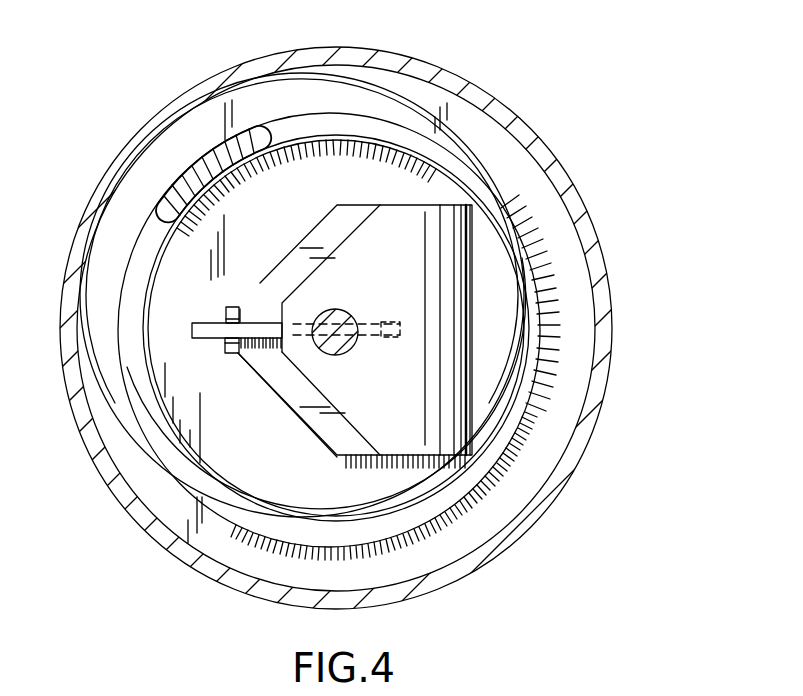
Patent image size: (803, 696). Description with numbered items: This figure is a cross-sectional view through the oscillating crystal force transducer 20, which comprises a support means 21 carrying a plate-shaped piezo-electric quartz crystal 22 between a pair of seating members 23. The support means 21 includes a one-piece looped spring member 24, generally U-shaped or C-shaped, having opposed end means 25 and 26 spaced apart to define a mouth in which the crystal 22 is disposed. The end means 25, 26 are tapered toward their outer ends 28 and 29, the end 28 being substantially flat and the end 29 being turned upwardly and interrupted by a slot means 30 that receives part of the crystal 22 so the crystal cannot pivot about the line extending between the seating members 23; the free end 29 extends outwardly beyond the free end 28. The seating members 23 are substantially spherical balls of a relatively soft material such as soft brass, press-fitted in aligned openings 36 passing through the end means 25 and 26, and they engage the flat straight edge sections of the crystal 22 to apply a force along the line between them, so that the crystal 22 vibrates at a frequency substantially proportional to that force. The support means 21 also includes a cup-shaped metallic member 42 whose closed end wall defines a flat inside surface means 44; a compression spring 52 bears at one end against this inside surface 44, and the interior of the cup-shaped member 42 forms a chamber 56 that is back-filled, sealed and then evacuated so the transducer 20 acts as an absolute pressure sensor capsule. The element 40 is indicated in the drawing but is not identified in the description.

The oscillating crystal force transducer 20 is at (586, 122).
The support means 21 is at (588, 443).
The cup-shaped metallic member 42 is at (588, 221).
The inside surface means 44 is at (583, 350).
The chamber 56 is at (361, 95).
The compression spring 52 is at (150, 413).
The looped spring member 24 is at (410, 432).
The plate 40 is at (476, 307).
The outer end 28 is at (285, 306).
The end means 25 is at (303, 362).
The end means 26 is at (262, 363).
The seating members 23 is at (340, 312).
The openings 36 is at (347, 352).
The piezo-electric quartz crystal 22 is at (215, 340).
The slot means 30 is at (244, 316).
The outer end 29 is at (225, 318).